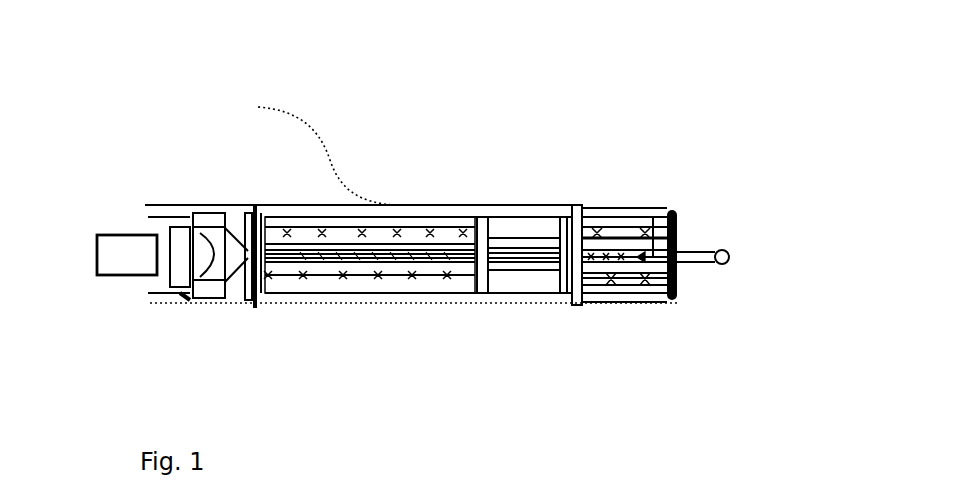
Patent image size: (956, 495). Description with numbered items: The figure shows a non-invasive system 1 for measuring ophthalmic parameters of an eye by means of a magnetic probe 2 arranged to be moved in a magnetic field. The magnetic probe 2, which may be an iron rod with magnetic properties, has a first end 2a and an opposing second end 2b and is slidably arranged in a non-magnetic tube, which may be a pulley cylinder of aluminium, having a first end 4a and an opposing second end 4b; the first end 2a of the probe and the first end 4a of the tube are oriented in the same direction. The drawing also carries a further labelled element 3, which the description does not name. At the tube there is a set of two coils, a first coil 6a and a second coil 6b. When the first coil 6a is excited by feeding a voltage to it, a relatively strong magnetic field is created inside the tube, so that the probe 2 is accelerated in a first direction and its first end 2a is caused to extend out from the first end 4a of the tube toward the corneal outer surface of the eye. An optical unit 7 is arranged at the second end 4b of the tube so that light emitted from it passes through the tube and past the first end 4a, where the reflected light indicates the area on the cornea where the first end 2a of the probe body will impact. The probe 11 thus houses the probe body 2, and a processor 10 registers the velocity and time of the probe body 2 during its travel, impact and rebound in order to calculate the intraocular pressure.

The system 1 is at (424, 350).
The magnetic probe 2 is at (700, 264).
The first end of the probe 2a is at (726, 249).
The second end of the probe 2b is at (312, 258).
The housing 3 is at (508, 208).
The first end of the tube 4a is at (672, 218).
The second end of the tube 4b is at (250, 300).
The first coil 6a is at (628, 216).
The second coil 6b is at (425, 208).
The optical unit 7 is at (116, 277).
The processor 10 is at (308, 153).
The probe 11 is at (537, 305).